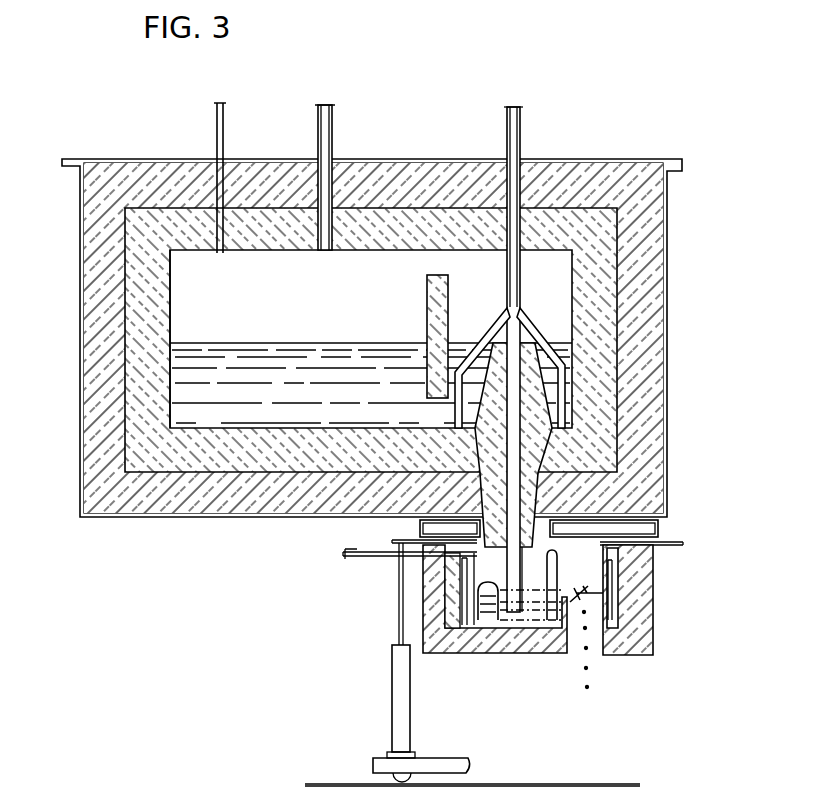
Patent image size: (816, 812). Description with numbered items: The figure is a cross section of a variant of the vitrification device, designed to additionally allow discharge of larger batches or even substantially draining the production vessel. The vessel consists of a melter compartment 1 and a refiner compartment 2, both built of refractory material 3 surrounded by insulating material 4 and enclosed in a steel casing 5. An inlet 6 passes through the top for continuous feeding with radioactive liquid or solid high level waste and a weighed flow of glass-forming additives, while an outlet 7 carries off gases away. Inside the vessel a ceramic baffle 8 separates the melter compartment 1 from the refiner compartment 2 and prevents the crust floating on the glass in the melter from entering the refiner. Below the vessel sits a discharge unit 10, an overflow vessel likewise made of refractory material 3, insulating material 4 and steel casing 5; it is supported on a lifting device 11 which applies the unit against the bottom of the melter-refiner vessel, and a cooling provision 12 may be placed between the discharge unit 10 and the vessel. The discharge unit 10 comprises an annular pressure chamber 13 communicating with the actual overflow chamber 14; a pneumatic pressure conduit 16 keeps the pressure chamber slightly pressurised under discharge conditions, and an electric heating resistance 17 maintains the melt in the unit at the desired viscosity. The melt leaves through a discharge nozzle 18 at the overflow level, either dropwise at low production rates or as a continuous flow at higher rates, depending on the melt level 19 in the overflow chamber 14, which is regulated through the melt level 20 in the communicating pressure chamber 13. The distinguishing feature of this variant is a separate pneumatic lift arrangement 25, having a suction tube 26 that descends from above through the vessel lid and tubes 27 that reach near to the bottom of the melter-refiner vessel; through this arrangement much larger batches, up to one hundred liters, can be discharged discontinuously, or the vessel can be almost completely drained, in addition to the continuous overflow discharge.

The melter compartment 1 is at (266, 270).
The refiner compartment 2 is at (535, 267).
The refractory material 3 is at (170, 298).
The insulating material 4 is at (105, 460).
The steel casing 5 is at (667, 252).
The inlet 6 is at (224, 141).
The outlet 7 is at (333, 131).
The ceramic baffle 8 is at (426, 318).
The discharge unit 10 is at (656, 617).
The lifting device 11 is at (368, 755).
The cooling provision 12 is at (657, 532).
The pressure chamber 13 is at (445, 580).
The overflow chamber 14 is at (533, 607).
The pneumatic pressure conduit 16 is at (355, 558).
The electric heating resistance 17 is at (607, 572).
The discharge nozzle 18 is at (586, 607).
The melt level 19 is at (530, 591).
The melt level 20 is at (497, 613).
The pneumatic lift arrangement 25 is at (507, 303).
The suction tube 26 is at (520, 141).
The tubes 27 is at (455, 416).